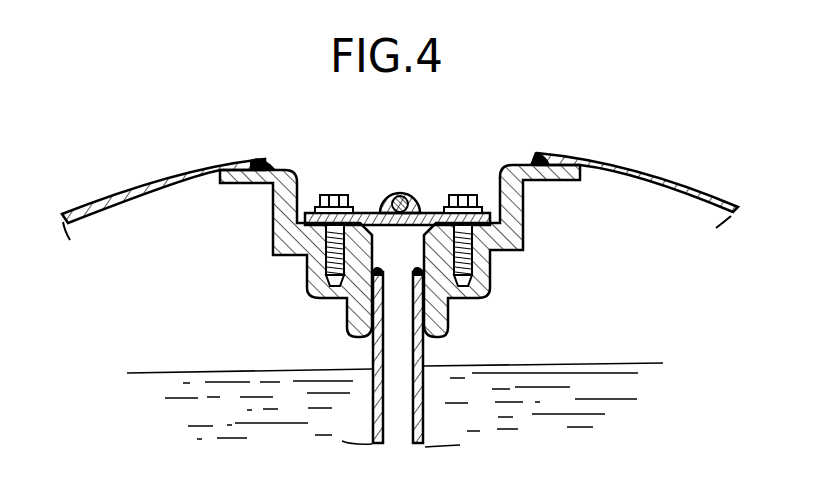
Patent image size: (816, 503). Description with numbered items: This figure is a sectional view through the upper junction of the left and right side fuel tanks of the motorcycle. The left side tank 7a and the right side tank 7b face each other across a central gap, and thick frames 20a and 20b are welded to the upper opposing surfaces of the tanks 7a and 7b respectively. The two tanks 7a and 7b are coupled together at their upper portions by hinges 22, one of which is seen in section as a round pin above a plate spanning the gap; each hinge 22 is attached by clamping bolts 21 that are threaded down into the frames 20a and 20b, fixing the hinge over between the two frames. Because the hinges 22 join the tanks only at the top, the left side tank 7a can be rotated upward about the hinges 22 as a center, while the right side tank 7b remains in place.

The left side tank 7a is at (98, 188).
The right side tank 7b is at (663, 163).
The thick frame 20a is at (312, 278).
The thick frame 20b is at (485, 280).
The clamping bolt 21 is at (333, 194).
The hinge 22 is at (432, 212).